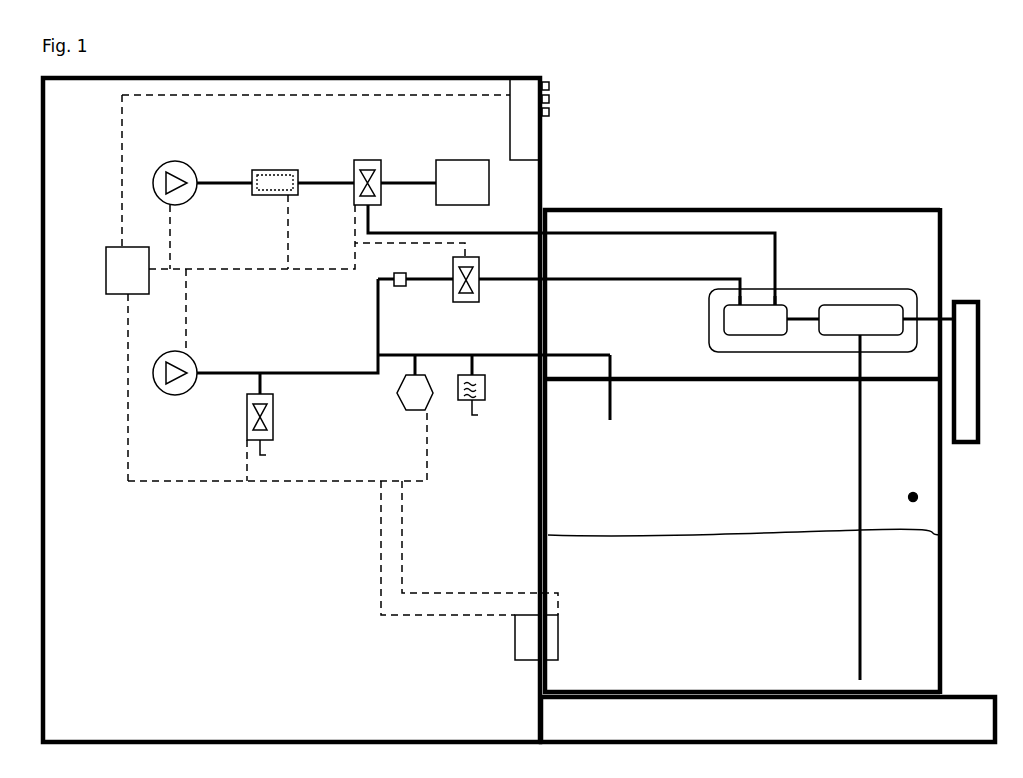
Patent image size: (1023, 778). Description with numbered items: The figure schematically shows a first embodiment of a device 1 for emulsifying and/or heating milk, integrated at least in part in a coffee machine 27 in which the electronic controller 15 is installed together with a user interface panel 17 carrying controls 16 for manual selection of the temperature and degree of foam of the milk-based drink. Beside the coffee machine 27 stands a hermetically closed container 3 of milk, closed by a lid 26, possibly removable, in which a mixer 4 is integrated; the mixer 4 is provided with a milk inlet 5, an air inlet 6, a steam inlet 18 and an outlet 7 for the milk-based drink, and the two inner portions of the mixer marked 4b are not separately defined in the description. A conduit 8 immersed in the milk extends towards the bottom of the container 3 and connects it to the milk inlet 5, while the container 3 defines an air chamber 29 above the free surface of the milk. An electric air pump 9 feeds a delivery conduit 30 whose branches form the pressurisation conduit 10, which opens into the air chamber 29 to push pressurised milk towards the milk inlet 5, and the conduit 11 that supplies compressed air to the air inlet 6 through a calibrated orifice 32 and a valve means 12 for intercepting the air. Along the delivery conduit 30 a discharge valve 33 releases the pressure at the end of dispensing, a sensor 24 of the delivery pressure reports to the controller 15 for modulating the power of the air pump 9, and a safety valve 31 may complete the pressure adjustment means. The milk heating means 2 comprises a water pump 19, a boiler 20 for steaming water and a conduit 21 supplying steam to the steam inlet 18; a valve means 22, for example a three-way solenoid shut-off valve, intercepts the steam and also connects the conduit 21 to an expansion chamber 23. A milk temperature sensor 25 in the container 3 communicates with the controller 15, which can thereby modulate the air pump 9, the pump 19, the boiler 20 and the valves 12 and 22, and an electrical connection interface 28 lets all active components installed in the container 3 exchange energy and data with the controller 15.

The device for emulsifying and/or heating milk 1 is at (668, 181).
The means for heating the milk 2 is at (220, 160).
The hermetically closed container 3 is at (942, 565).
The mixer 4 is at (826, 288).
The sensor element 4b is at (877, 303).
The milk inlet 5 is at (858, 337).
The air inlet 6 is at (743, 302).
The outlet 7 is at (980, 308).
The conduit 8 is at (857, 507).
The air pump 9 is at (170, 395).
The pressurisation conduit 10 is at (600, 352).
The conduit for supplying compressed air 11 is at (650, 277).
The valve means for intercepting the compressed air 12 is at (480, 266).
The electronic controller 15 is at (106, 271).
The controls 16 is at (552, 102).
The user interface panel 17 is at (525, 92).
The inlet of steam 18 is at (779, 302).
The water pump 19 is at (173, 160).
The boiler 20 is at (277, 168).
The conduit for supplying steam 21 is at (747, 232).
The valve means for intercepting the steam 22 is at (368, 158).
The expansion chamber 23 is at (468, 158).
The sensor of the delivery pressure 24 is at (397, 400).
The milk temperature sensor 25 is at (560, 642).
The lid 26 is at (943, 240).
The coffee machine 27 is at (333, 64).
The electrical connection interface 28 is at (517, 651).
The air chamber 29 is at (915, 496).
The delivery conduit 30 is at (310, 371).
The safety valve 31 is at (488, 400).
The calibrated orifice 32 is at (404, 287).
The discharge valve 33 is at (247, 400).